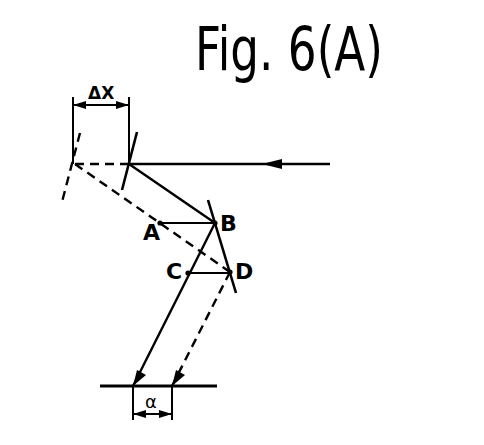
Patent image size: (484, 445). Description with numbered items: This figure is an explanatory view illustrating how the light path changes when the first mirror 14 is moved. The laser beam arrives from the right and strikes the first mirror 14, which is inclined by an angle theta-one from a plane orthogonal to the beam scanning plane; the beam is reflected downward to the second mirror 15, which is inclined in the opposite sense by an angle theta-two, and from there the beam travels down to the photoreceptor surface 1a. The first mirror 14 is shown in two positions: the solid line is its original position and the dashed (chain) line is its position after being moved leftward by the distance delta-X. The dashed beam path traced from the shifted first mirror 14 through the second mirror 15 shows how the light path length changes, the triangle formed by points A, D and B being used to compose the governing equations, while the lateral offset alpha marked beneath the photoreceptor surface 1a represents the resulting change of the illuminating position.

The first mirror 14 is at (135, 147).
The second mirror 15 is at (236, 295).
The photoreceptor surface 1a is at (118, 386).